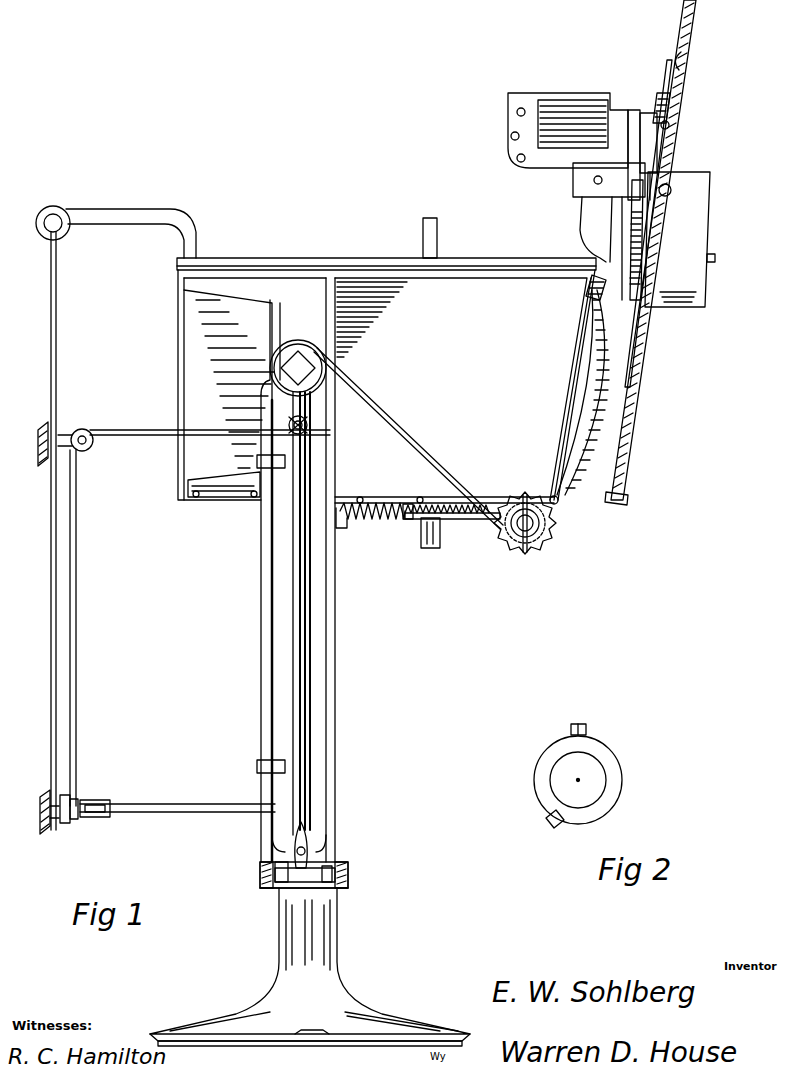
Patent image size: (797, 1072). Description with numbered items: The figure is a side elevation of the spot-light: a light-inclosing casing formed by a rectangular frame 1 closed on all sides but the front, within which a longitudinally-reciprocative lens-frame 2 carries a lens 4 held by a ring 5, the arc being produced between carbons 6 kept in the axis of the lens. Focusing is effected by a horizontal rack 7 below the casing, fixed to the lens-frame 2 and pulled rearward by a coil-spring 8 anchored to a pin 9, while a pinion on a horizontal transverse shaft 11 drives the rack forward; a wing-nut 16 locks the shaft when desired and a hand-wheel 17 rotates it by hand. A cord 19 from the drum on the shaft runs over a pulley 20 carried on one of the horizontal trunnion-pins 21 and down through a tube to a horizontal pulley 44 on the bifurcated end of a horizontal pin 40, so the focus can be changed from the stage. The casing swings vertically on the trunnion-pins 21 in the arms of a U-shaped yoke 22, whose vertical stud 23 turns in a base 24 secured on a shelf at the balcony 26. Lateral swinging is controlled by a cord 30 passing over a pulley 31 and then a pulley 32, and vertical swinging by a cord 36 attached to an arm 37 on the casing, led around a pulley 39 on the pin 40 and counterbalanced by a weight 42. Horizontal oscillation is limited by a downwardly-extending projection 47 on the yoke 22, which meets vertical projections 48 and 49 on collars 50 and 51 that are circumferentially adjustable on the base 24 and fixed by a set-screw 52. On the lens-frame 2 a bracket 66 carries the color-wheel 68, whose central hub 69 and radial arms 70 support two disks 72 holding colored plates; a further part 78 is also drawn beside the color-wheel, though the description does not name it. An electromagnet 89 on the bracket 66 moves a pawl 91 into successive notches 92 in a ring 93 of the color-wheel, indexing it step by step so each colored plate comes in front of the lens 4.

In FIG. 1, the rectangular frame 1 is at (490, 240).
In FIG. 1, the lens-frame 2 is at (588, 275).
In FIG. 1, the lens 4 is at (583, 392).
In FIG. 1, the ring 5 is at (603, 296).
In FIG. 1, the carbons 6 is at (423, 238).
In FIG. 1, the horizontal rack 7 is at (416, 506).
In FIG. 1, the coil-spring 8 is at (364, 504).
In FIG. 1, the pin 9 is at (340, 522).
In FIG. 1, the horizontal transverse shaft 11 is at (540, 530).
In FIG. 1, the wing-nut 16 is at (532, 535).
In FIG. 1, the hand-wheel 17 is at (503, 540).
In FIG. 1, the cord 19 is at (378, 395).
In FIG. 1, the pulley 20 is at (303, 342).
In FIG. 1, the horizontal trunnion-pins 21 is at (298, 368).
In FIG. 1, the U-shaped yoke 22 is at (292, 617).
In FIG. 1, the vertical stud 23 is at (308, 430).
In FIG. 1, the base 24 is at (338, 942).
In FIG. 1, the balcony 26 is at (40, 428).
In FIG. 1, the cord 30 is at (166, 430).
In FIG. 1, the pulley 31 is at (84, 430).
In FIG. 1, the pulley 32 is at (76, 800).
In FIG. 1, the cord 36 is at (57, 290).
In FIG. 1, the arm 37 is at (145, 236).
In FIG. 1, the pulley 39 is at (72, 822).
In FIG. 1, the horizontal pin 40 is at (52, 830).
In FIG. 1, the weight 42 is at (261, 556).
In FIG. 1, the horizontal pulley 44 is at (110, 804).
In FIG. 1, the downwardly-extending projection 47 is at (312, 850).
In FIG. 1, the vertical projection 48 is at (260, 882).
In FIG. 1, the vertical projection 49 is at (348, 880).
In FIG. 2, the vertical projection 49 is at (552, 828).
In FIG. 1, the collar 50 is at (348, 866).
In FIG. 1, the collar 51 is at (328, 888).
In FIG. 2, the collar 51 is at (540, 790).
In FIG. 2, the set-screw 52 is at (570, 729).
In FIG. 1, the bracket 66 is at (581, 220).
In FIG. 1, the color-wheel 68 is at (664, 252).
In FIG. 1, the central hub 69 is at (636, 200).
In FIG. 1, the radial arms 70 is at (670, 72).
In FIG. 1, the disks 72 is at (690, 40).
In FIG. 1, the box 78 is at (714, 262).
In FIG. 1, the electromagnet 89 is at (557, 94).
In FIG. 1, the pawl 91 is at (636, 115).
In FIG. 1, the notches 92 is at (670, 126).
In FIG. 1, the ring 93 is at (672, 105).